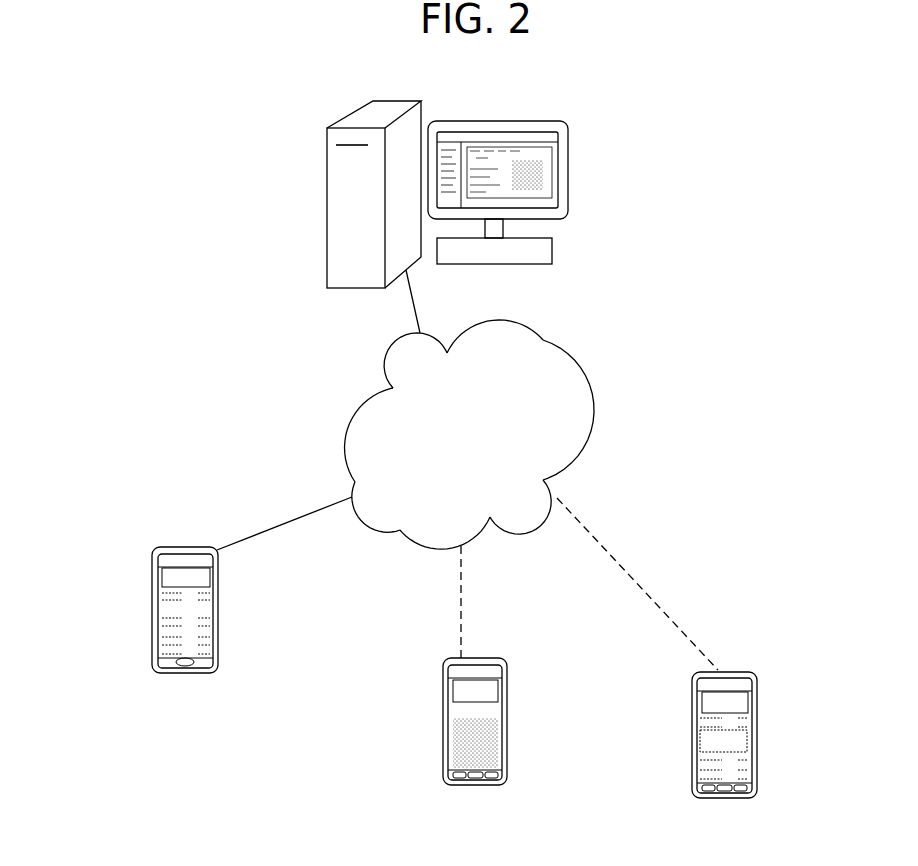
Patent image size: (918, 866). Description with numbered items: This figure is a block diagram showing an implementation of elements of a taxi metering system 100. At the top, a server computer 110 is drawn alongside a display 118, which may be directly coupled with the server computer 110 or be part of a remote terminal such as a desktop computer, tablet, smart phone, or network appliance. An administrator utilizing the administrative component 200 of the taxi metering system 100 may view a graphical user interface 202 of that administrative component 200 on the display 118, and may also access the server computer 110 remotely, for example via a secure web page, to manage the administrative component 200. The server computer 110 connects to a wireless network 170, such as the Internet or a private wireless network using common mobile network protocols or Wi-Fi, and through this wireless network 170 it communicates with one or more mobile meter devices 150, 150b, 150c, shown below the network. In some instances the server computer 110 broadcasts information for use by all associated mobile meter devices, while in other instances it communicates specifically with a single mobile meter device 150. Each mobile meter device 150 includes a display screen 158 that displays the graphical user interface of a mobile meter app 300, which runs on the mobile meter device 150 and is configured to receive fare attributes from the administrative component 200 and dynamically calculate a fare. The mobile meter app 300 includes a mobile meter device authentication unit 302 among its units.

The taxi metering system 100 is at (693, 59).
The server computer 110 is at (340, 120).
The display 118 is at (579, 169).
The administrative component 200 is at (583, 175).
The graphical user interface 202 is at (543, 162).
The wireless network 170 is at (488, 449).
The mobile meter device 150 is at (169, 610).
The mobile meter device 150b is at (443, 674).
The mobile meter device 150c is at (692, 705).
The display screen 158 is at (169, 611).
The mobile meter app 300 is at (125, 606).
The mobile meter device authentication unit 302 is at (125, 606).